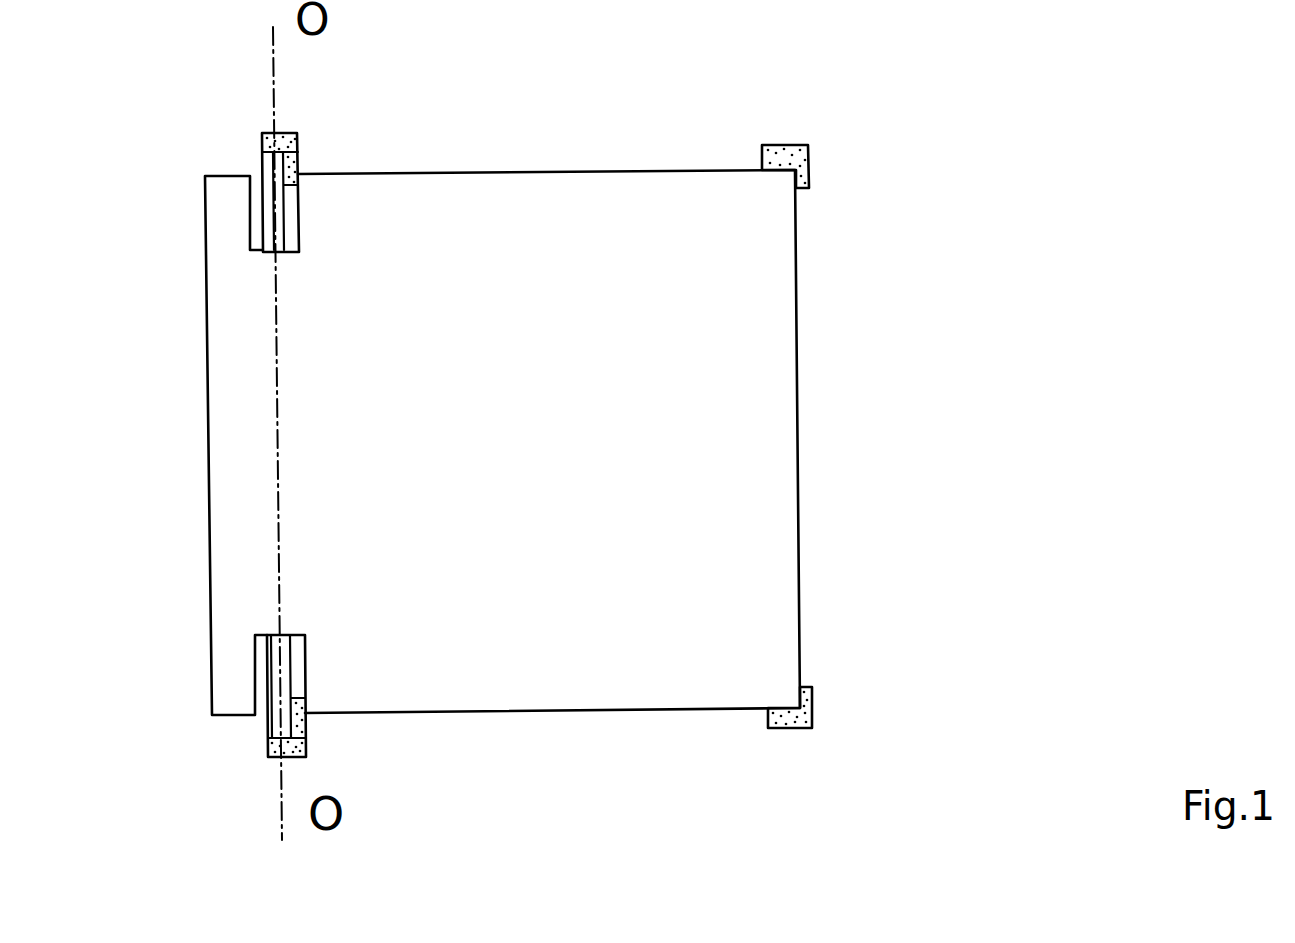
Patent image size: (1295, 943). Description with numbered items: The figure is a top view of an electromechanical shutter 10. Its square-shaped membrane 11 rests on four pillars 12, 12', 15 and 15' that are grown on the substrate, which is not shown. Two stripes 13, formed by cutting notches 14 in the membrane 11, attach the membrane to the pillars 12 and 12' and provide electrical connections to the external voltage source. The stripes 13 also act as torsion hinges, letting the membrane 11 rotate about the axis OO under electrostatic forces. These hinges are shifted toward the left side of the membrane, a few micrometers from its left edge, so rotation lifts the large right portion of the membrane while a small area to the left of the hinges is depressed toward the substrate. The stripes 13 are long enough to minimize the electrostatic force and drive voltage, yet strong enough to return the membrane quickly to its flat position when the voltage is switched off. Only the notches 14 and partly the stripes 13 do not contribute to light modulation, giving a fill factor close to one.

The shutter 10 is at (542, 421).
The membrane 11 is at (505, 302).
The pillar 12 is at (343, 146).
The pillar 12' is at (367, 718).
The stripe 13 is at (259, 248).
The notch 14 is at (260, 222).
The pillar 15 is at (828, 124).
The pillar 15' is at (862, 730).